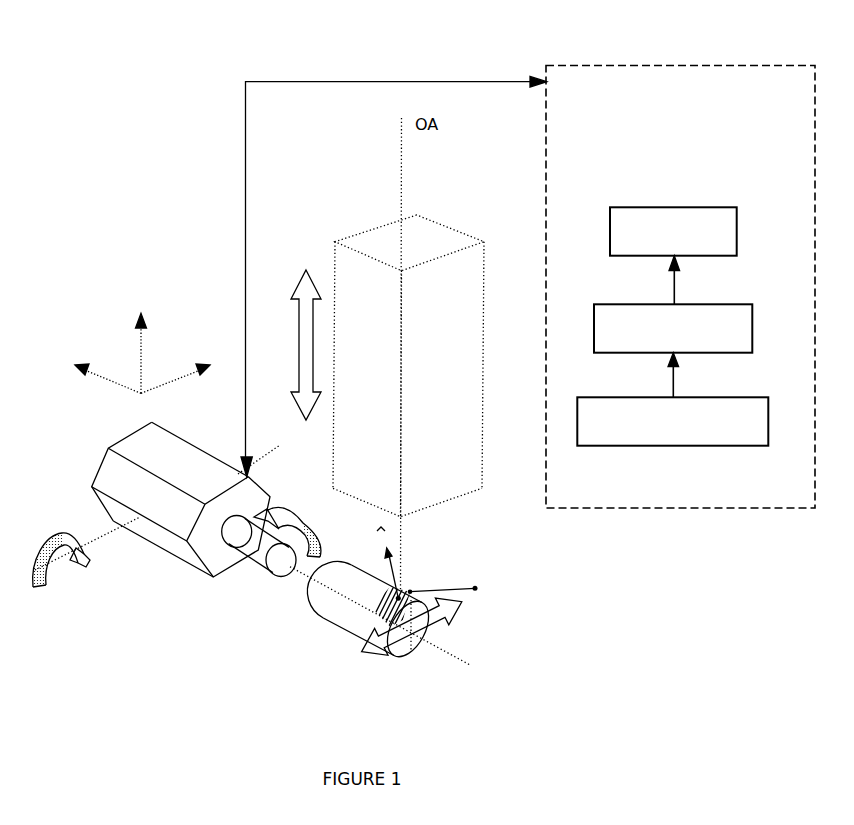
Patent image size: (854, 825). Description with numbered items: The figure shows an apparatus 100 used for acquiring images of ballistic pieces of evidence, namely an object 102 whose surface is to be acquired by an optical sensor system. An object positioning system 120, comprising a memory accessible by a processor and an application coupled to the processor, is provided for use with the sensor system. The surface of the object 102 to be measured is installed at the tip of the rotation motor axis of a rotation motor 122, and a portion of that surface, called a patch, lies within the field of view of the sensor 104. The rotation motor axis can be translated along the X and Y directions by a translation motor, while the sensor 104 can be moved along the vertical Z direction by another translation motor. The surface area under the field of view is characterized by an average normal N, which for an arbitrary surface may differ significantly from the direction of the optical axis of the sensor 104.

The apparatus 100 is at (184, 168).
The object positioning system 120 is at (570, 57).
The sensor 104 is at (468, 432).
The rotation motor 122 is at (152, 531).
The object 102 is at (357, 623).